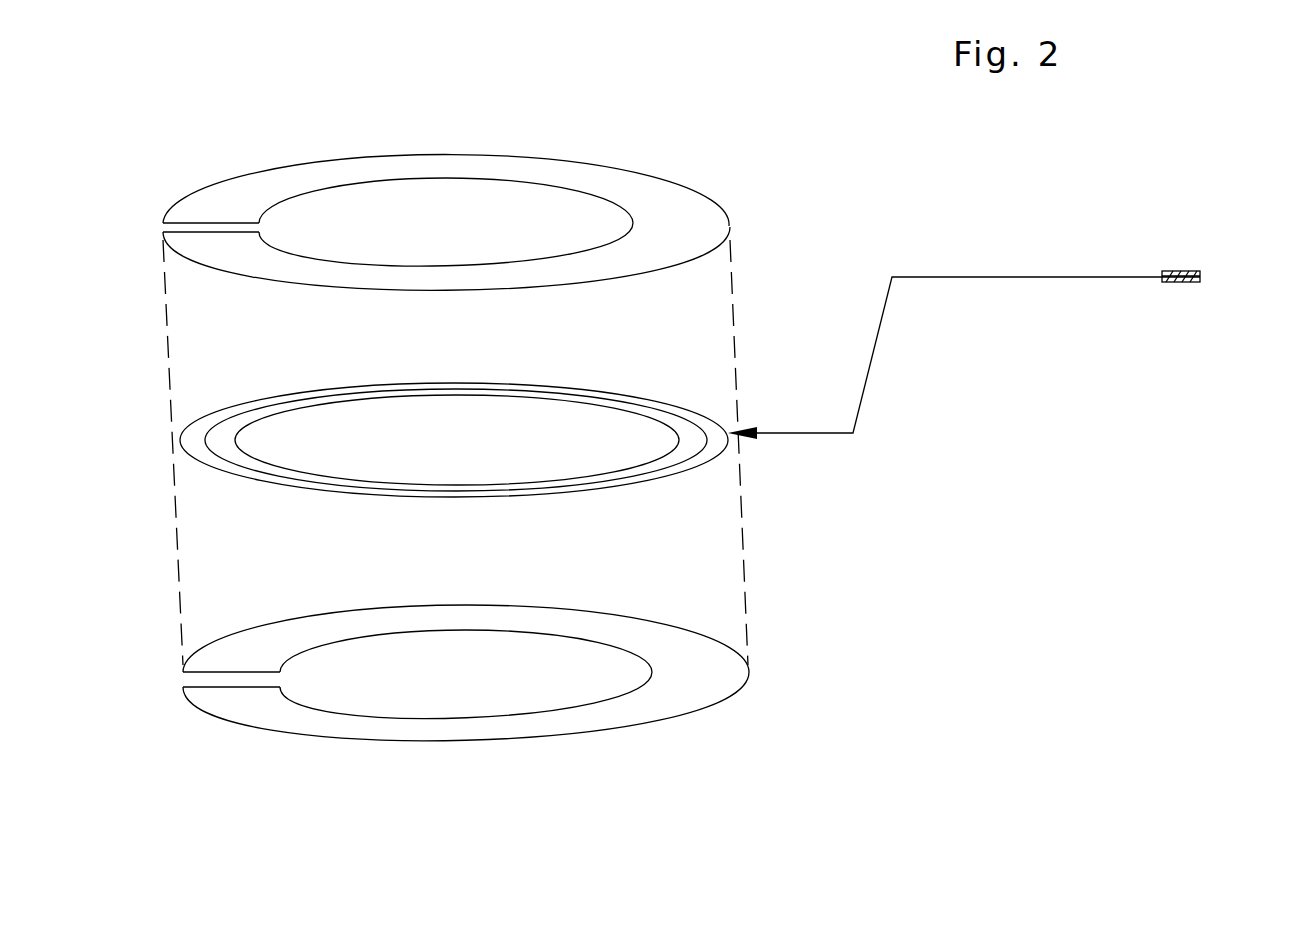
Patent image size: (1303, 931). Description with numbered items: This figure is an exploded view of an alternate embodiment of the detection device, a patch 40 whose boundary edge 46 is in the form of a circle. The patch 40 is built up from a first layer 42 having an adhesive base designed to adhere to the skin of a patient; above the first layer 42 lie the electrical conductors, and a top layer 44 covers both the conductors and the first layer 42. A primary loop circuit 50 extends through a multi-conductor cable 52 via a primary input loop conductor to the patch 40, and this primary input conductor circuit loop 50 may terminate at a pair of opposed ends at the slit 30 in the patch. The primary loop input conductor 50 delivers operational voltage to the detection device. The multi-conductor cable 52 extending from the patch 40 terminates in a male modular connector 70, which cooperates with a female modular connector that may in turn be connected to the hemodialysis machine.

The slit 30 is at (220, 228).
The patch 40 is at (920, 558).
The first layer 42 is at (567, 722).
The top layer 44 is at (663, 202).
The boundary edge 46 is at (375, 740).
The primary loop circuit 50 is at (275, 470).
The multi-conductor cable 52 is at (982, 277).
The male modular connector 70 is at (1185, 268).